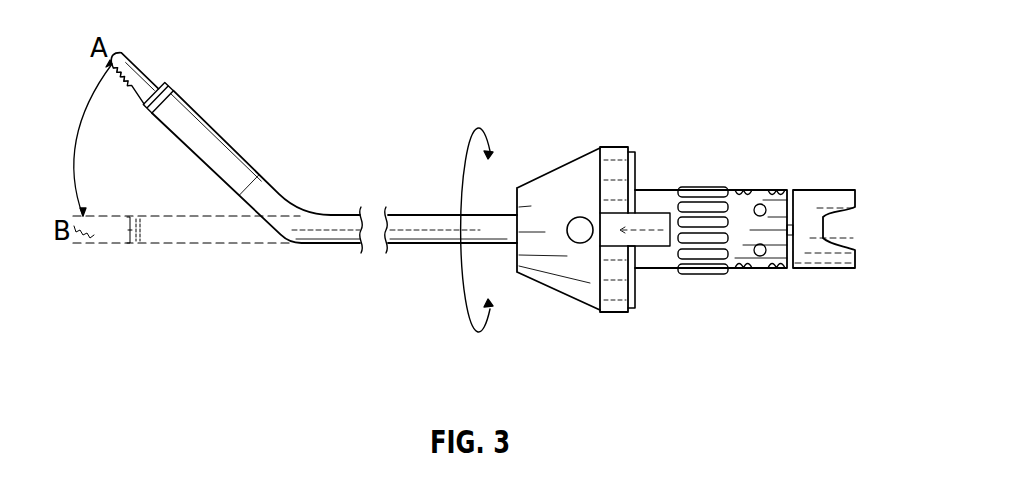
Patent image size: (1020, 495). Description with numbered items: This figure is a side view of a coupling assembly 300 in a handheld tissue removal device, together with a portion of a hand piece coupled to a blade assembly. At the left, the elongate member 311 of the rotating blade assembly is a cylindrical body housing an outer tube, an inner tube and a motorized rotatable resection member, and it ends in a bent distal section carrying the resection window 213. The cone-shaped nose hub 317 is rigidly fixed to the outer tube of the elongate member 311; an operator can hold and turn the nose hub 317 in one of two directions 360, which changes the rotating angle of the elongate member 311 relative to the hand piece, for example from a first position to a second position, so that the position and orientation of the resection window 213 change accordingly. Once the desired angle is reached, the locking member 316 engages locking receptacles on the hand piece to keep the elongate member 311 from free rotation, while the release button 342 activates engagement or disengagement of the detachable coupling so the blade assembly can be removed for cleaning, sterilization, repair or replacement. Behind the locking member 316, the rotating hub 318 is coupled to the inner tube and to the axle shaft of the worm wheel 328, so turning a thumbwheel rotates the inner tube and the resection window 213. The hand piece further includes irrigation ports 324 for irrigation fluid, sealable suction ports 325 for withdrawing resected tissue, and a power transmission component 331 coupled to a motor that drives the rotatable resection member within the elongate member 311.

The coupling assembly 300 is at (841, 128).
The elongate member 311 is at (278, 200).
The resection window 213 is at (121, 79).
The directions 360 is at (460, 283).
The nose hub 317 is at (560, 280).
The release button 342 is at (589, 225).
The locking member 316 is at (625, 157).
The rotating hub 318 is at (662, 264).
The worm wheel 328 is at (702, 191).
The irrigation ports 324 is at (763, 257).
The sealable suction ports 325 is at (744, 268).
The power transmission component 331 is at (833, 258).